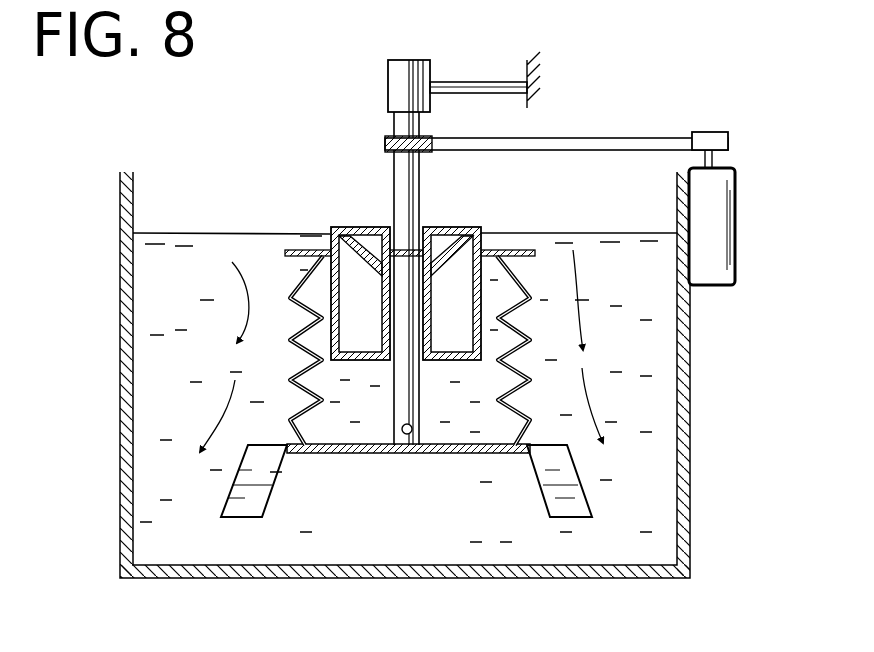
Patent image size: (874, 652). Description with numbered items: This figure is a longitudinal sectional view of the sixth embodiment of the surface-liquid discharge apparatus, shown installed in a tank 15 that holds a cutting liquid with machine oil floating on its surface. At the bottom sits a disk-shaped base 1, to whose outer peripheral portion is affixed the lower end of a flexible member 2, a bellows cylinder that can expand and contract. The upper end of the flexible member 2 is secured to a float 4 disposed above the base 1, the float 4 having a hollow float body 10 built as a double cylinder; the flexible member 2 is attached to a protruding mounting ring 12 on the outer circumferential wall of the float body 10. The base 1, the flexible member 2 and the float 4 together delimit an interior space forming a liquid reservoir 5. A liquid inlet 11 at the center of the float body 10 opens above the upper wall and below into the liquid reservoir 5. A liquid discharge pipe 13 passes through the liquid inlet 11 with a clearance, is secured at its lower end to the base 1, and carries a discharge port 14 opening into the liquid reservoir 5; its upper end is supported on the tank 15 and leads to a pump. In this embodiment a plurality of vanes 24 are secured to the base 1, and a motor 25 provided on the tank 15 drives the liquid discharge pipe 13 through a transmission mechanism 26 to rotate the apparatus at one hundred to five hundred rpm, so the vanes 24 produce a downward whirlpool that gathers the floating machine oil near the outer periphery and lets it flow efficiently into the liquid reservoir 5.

The base 1 is at (492, 460).
The flexible member 2 is at (307, 353).
The float 4 is at (322, 232).
The liquid reservoir 5 is at (327, 500).
The float body 10 is at (481, 342).
The liquid inlet 11 is at (430, 237).
The mounting ring 12 is at (283, 238).
The liquid discharge pipe 13 is at (393, 197).
The discharge port 14 is at (410, 455).
The tank 15 is at (690, 417).
The vane 24 is at (245, 503).
The motor 25 is at (737, 205).
The transmission mechanism 26 is at (582, 140).